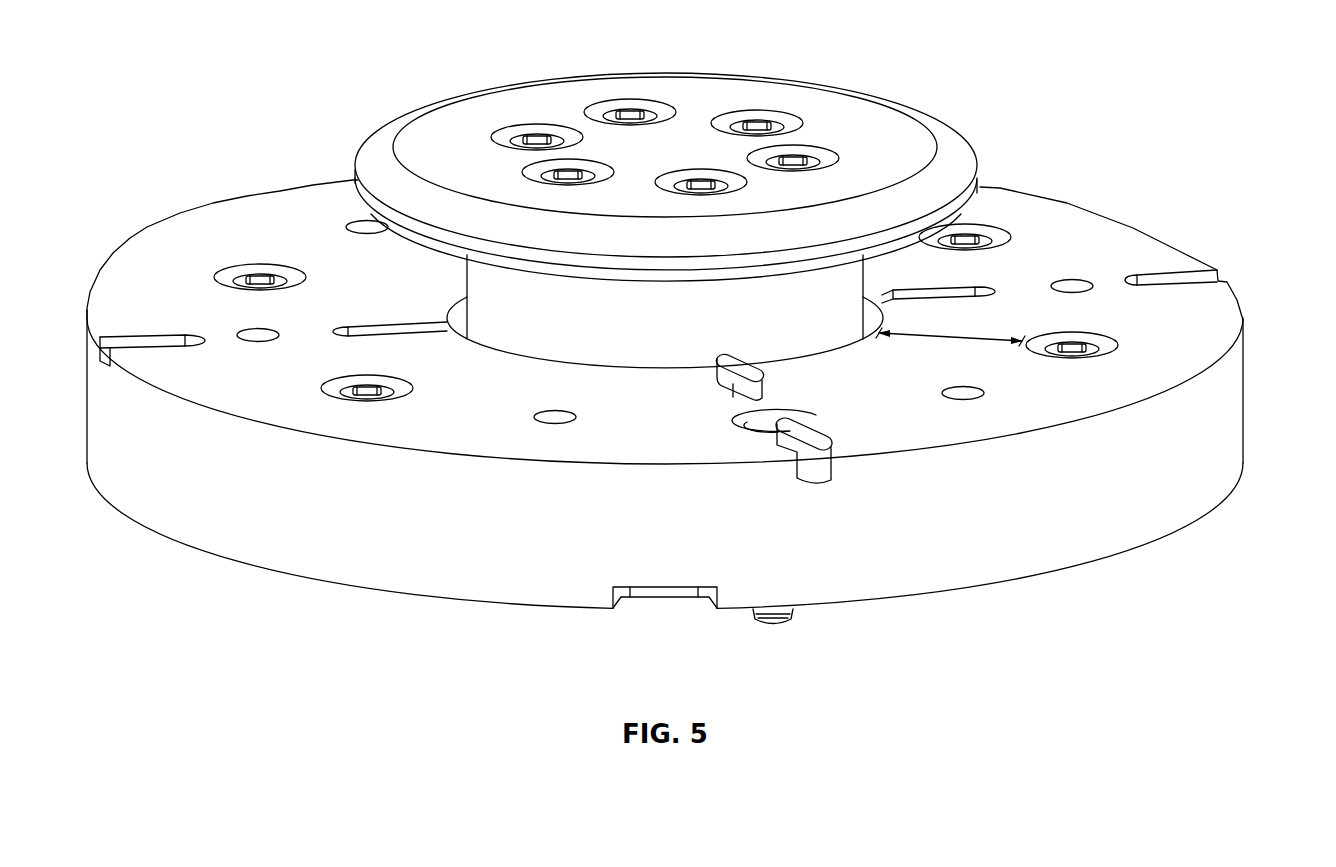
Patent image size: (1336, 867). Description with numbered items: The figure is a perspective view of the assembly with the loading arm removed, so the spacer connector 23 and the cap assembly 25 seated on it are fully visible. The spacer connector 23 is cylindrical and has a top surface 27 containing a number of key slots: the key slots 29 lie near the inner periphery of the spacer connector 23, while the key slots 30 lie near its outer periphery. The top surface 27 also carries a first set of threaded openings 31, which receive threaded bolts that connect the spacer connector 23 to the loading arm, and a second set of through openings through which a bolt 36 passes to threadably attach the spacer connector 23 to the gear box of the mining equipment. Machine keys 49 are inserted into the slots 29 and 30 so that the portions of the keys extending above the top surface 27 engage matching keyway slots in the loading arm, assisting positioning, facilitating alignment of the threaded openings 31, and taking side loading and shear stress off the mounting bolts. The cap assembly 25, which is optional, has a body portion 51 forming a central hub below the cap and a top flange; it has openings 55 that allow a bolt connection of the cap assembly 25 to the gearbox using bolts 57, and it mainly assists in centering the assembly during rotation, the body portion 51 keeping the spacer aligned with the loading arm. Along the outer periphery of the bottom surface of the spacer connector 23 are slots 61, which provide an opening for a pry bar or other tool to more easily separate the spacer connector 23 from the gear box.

The spacer connector 23 is at (1243, 397).
The cap assembly 25 is at (917, 78).
The top surface 27 is at (950, 349).
The key slots 29 is at (984, 284).
The key slots 30 is at (1163, 270).
The threaded openings 31 is at (576, 418).
The bolt 36 is at (778, 628).
The machine keys 49 is at (836, 433).
The body portion 51 is at (513, 313).
The openings 55 is at (538, 122).
The bolts 57 is at (629, 112).
The slots 61 is at (659, 607).